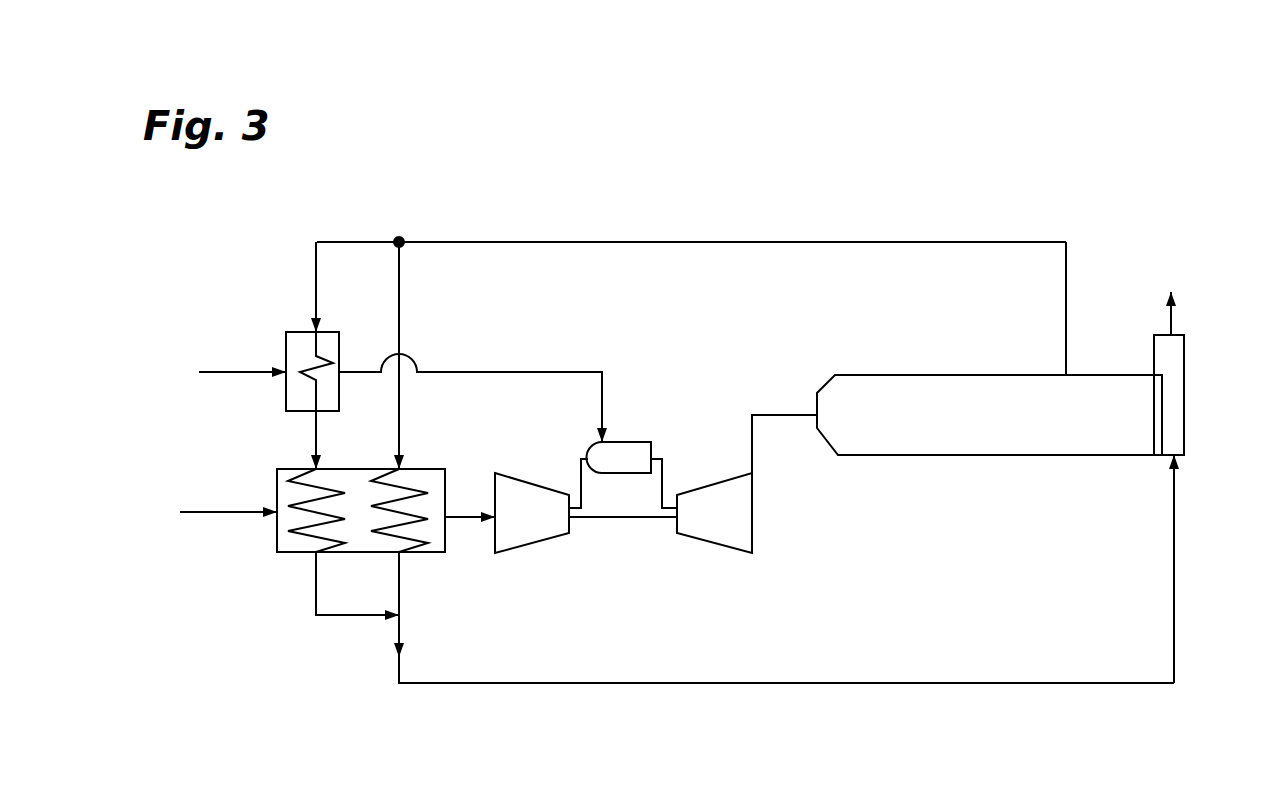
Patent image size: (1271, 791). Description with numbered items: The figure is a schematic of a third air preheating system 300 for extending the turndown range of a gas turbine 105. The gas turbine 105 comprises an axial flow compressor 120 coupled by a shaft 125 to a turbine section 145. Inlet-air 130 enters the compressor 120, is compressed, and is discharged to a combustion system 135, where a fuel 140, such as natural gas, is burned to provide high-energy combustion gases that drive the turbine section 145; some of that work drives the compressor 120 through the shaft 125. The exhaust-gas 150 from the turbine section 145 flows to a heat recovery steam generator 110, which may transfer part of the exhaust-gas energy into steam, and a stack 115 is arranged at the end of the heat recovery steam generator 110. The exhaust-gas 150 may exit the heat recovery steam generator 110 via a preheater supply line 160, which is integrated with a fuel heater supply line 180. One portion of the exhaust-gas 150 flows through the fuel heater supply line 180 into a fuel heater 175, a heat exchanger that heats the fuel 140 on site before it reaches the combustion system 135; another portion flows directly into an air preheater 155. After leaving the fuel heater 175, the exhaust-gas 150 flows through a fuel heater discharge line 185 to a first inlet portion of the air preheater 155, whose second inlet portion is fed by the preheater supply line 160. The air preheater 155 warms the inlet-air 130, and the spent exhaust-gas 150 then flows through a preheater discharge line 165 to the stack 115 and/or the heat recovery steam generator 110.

The gas turbine 105 is at (623, 511).
The heat recovery steam generator 110 is at (925, 457).
The stack 115 is at (1185, 372).
The axial flow compressor 120 is at (550, 524).
The shaft 125 is at (590, 517).
The inlet-air 130 is at (210, 512).
The combustion system 135 is at (638, 469).
The fuel 140 is at (228, 372).
The turbine section 145 is at (735, 524).
The exhaust-gas 150 is at (780, 413).
The air preheater 155 is at (275, 483).
The preheater supply line 160 is at (399, 300).
The preheater discharge line 165 is at (350, 617).
The fuel heater 175 is at (287, 332).
The fuel heater supply line 180 is at (341, 242).
The fuel heater discharge line 185 is at (313, 431).
The third air preheating system 300 is at (185, 612).